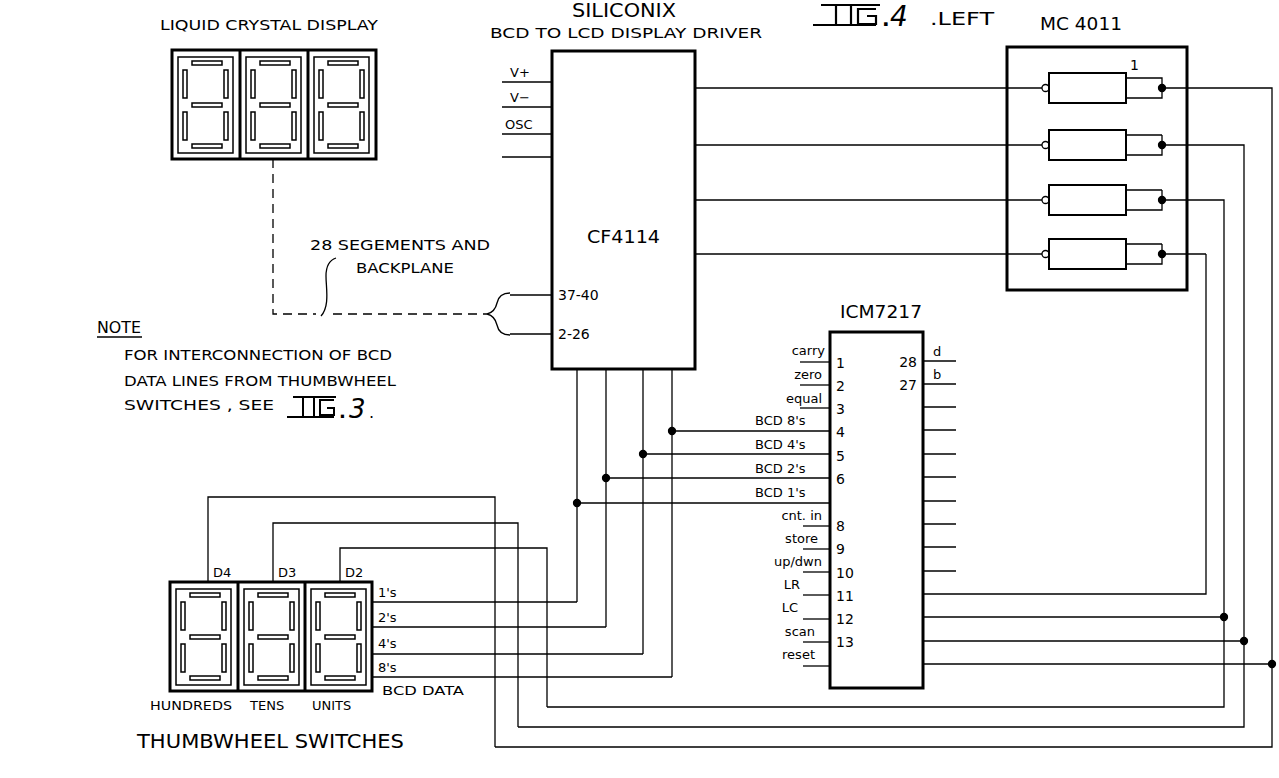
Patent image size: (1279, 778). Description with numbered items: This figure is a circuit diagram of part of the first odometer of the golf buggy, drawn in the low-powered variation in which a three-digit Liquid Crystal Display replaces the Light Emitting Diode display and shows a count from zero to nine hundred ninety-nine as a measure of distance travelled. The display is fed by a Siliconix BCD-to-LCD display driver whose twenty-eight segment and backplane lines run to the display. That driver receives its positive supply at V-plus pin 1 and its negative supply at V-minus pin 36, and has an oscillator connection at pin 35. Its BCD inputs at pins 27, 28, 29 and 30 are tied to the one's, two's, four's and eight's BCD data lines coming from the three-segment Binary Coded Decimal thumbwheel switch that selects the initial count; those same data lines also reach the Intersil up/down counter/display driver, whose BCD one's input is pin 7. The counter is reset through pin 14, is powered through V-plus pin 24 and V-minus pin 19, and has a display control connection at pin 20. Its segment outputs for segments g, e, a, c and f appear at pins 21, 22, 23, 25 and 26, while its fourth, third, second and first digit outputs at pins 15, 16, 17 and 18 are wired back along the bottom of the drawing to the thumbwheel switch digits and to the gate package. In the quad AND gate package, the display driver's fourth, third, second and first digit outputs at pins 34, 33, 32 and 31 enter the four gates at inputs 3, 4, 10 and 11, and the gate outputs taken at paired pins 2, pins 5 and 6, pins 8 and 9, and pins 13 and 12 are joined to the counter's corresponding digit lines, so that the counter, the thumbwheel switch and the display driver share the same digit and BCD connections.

The CF4114 V+ supply pin 1 is at (534, 82).
The CF4114 V- supply pin 36 is at (538, 107).
The CF4114 oscillator pin 35 is at (538, 134).
The CF4114 digit output D4 34 is at (857, 83).
The CF4114 digit output D3 33 is at (857, 141).
The CF4114 digit output D2 32 is at (857, 195).
The CF4114 digit output D1 31 is at (857, 249).
The CF4114 BCD 1's input pin 27 is at (577, 476).
The CF4114 BCD 2's input pin 28 is at (606, 489).
The CF4114 BCD 4's input pin 29 is at (643, 502).
The CF4114 BCD 8's input pin 30 is at (672, 514).
The ICM7217 BCD 1's pin 7 is at (711, 503).
The ICM7217 reset pin 14 is at (828, 666).
The ICM7217 digit D4 pin 15 is at (1087, 660).
The ICM7217 digit D3 pin 16 is at (1073, 636).
The ICM7217 digit D2 pin 17 is at (1063, 613).
The ICM7217 digit D1 pin 18 is at (1052, 428).
The ICM7217 V- pin 19 is at (927, 567).
The ICM7217 display control pin 20 is at (947, 543).
The ICM7217 segment g pin 21 is at (927, 520).
The ICM7217 segment e pin 22 is at (927, 497).
The ICM7217 segment a pin 23 is at (927, 473).
The ICM7217 V+ pin 24 is at (927, 450).
The ICM7217 segment c pin 25 is at (927, 426).
The ICM7217 segment f pin 26 is at (927, 403).
The MC4011 first AND gate input 3 is at (1076, 86).
The MC4011 first AND gate output pin 2 is at (1146, 96).
The MC4011 second AND gate input 4 is at (1077, 143).
The MC4011 second AND gate output pin 5 is at (1144, 125).
The MC4011 second AND gate output pin 6 is at (1146, 152).
The MC4011 third AND gate input 10 is at (1073, 198).
The MC4011 third AND gate output pin 8 is at (1144, 180).
The MC4011 third AND gate output pin 9 is at (1146, 207).
The MC4011 fourth AND gate input 11 is at (1073, 252).
The MC4011 fourth AND gate output pin 13 is at (1144, 234).
The MC4011 fourth AND gate output pin 12 is at (1146, 263).